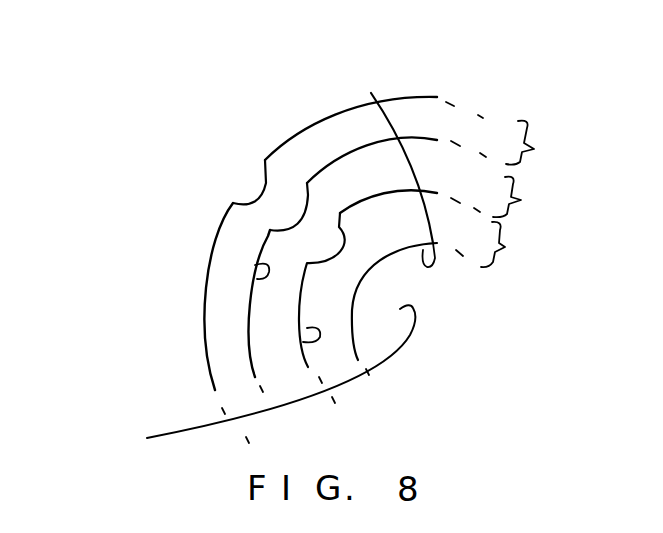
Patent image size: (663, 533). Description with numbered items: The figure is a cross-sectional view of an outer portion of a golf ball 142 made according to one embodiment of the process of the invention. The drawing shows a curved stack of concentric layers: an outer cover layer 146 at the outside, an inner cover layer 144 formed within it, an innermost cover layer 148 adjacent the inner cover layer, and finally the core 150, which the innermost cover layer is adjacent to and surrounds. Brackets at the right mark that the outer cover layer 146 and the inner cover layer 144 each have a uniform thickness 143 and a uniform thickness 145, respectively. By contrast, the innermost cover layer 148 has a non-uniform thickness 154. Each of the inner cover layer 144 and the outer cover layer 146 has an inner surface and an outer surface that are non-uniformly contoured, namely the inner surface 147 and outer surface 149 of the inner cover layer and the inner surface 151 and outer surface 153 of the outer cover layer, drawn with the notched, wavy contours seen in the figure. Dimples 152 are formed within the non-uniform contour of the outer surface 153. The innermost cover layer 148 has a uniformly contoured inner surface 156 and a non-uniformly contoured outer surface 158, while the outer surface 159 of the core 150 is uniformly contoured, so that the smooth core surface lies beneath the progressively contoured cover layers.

The golf ball 142 is at (393, 78).
The uniform thickness 143 is at (523, 140).
The inner cover layer 144 is at (338, 140).
The uniform thickness 145 is at (520, 206).
The outer cover layer 146 is at (337, 140).
The inner surface 147 is at (300, 273).
The innermost cover layer 148 is at (385, 238).
The outer surface 149 is at (255, 270).
The core 150 is at (247, 380).
The inner surface 151 is at (250, 295).
The dimples 152 is at (248, 185).
The outer surface 153 is at (200, 318).
The non-uniform thickness 154 is at (511, 252).
The inner surface 156 is at (347, 355).
The outer surface 158 is at (303, 342).
The outer surface 159 is at (388, 158).